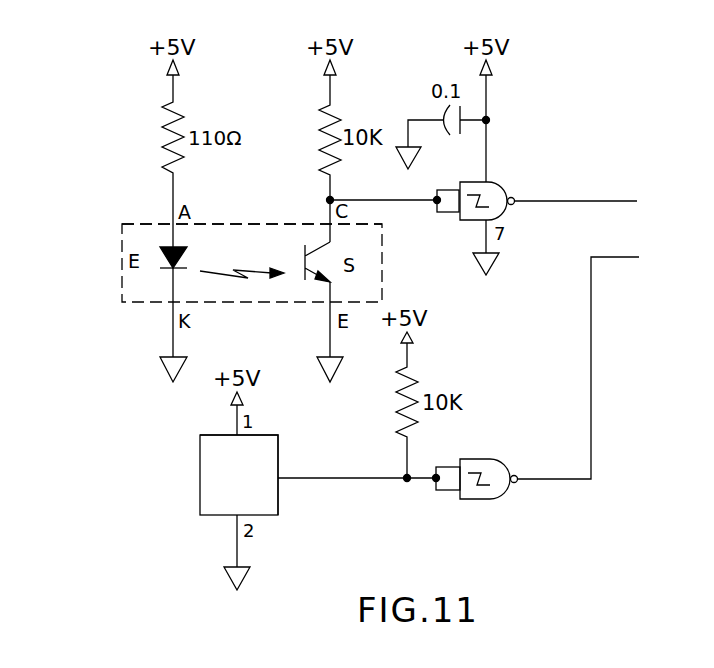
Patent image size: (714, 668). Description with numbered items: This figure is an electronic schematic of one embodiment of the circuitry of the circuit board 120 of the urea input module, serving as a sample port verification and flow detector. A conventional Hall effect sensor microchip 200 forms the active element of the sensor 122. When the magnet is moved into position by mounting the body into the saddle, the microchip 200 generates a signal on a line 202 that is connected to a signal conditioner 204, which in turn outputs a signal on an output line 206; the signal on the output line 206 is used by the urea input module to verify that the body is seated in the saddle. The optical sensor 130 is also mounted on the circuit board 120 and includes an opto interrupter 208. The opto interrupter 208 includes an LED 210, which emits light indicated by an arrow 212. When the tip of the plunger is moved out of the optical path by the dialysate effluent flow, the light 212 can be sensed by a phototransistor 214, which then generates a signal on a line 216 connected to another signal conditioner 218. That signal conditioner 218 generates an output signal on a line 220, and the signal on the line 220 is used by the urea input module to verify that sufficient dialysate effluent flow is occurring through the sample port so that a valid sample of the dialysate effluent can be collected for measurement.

The circuit board 120 is at (554, 180).
The sensor 122 is at (196, 476).
The optical sensor 130 is at (155, 212).
The Hall effect sensor microchip 200 is at (278, 504).
The line 202 is at (382, 478).
The signal conditioner 204 is at (492, 460).
The output line 206 is at (592, 375).
The opto interrupter 208 is at (258, 256).
The LED 210 is at (168, 272).
The light 212 is at (245, 277).
The phototransistor 214 is at (322, 284).
The line 216 is at (405, 202).
The signal conditioner 218 is at (500, 218).
The line 220 is at (605, 200).